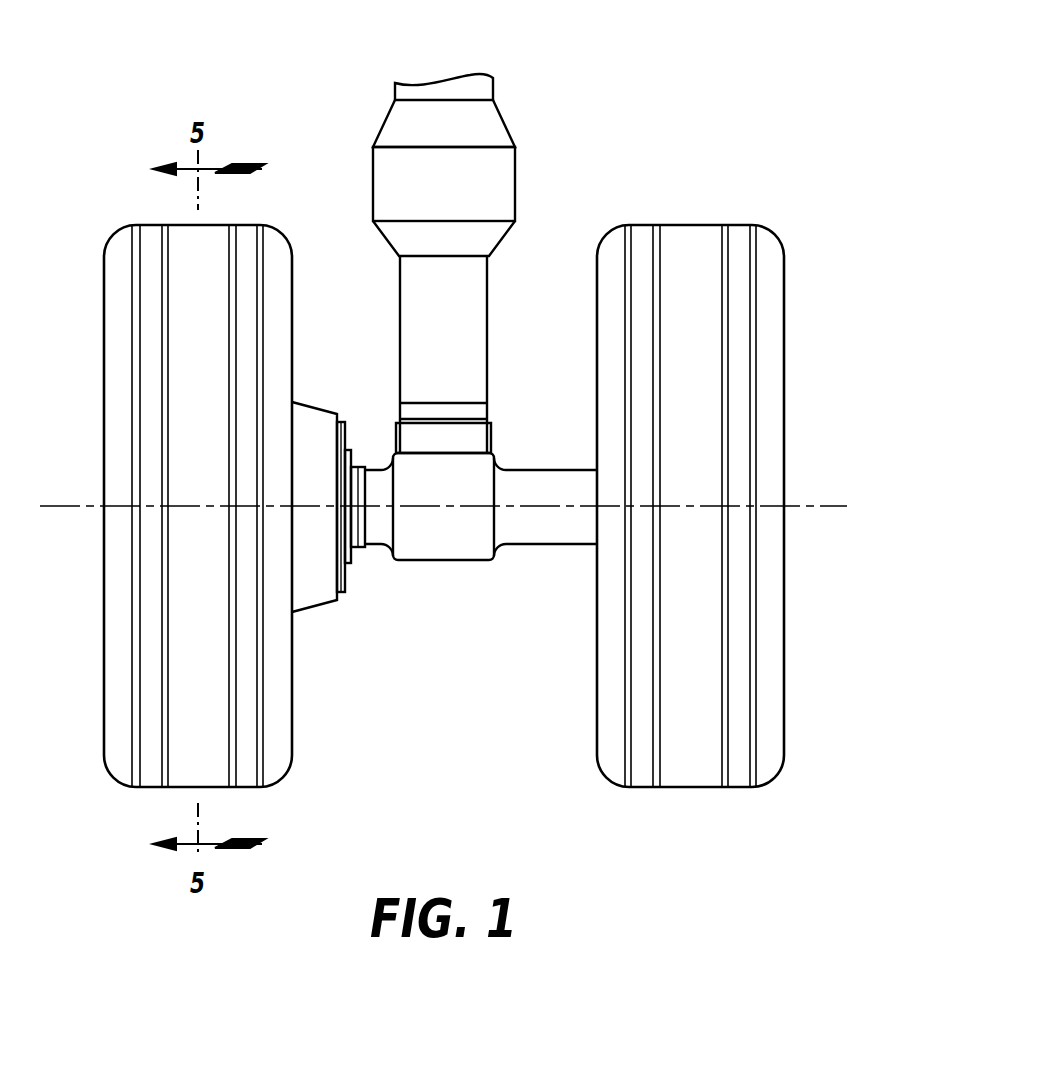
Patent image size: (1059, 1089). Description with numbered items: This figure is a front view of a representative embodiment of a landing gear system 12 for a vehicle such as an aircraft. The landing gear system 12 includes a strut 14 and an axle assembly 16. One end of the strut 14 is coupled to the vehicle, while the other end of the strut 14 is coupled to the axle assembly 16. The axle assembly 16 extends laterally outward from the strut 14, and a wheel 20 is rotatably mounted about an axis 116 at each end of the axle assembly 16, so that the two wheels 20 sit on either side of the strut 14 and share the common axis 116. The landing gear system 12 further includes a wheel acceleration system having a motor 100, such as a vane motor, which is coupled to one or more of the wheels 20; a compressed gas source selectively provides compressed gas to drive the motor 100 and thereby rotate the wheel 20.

The landing gear system 12 is at (668, 60).
The strut 14 is at (477, 340).
The axle assembly 16 is at (552, 530).
The wheel 20 is at (120, 248).
The motor 100 is at (342, 612).
The axis 116 is at (830, 506).